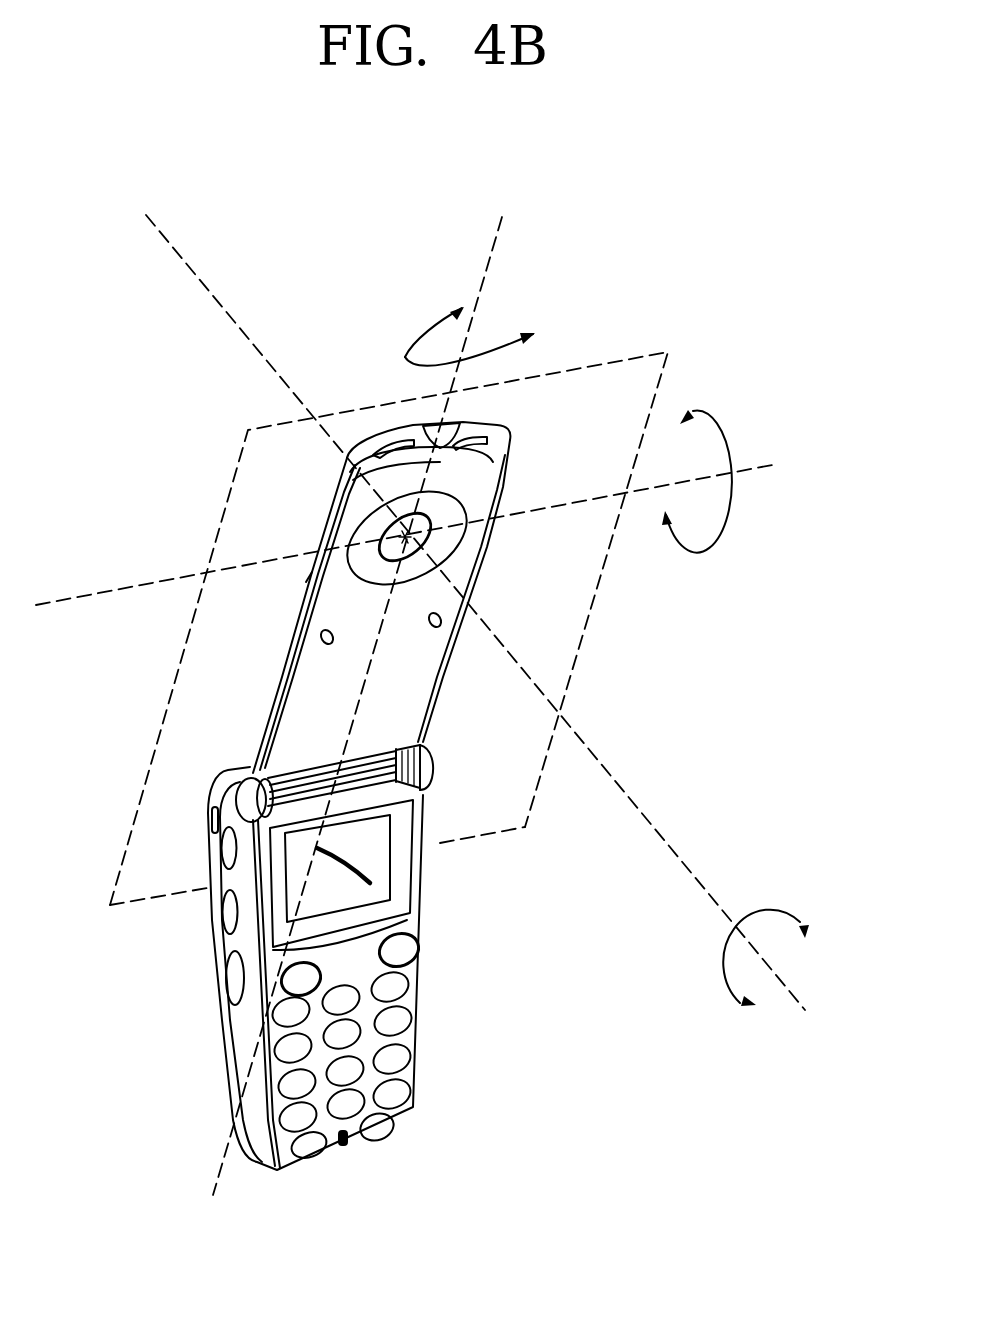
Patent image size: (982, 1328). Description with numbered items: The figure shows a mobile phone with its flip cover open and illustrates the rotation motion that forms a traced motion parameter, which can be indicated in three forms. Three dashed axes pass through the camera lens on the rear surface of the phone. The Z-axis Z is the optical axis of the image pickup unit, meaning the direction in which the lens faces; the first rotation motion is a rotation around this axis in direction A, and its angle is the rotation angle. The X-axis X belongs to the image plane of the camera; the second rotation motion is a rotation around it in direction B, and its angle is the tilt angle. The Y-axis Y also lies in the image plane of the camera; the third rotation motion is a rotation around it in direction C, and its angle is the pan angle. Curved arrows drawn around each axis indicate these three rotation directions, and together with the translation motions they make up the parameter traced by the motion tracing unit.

The X-axis X is at (422, 521).
The Y-axis Y is at (357, 719).
The Z-axis Z is at (497, 625).
The direction A is at (785, 937).
The direction B is at (714, 505).
The direction C is at (470, 319).